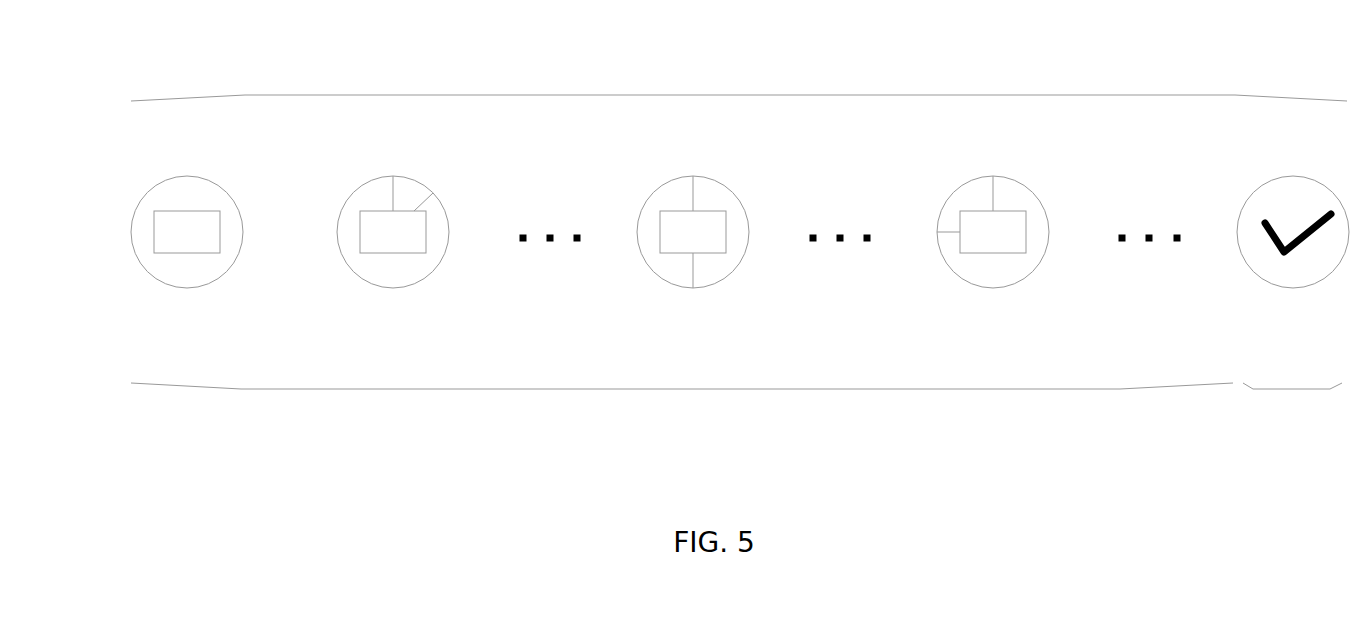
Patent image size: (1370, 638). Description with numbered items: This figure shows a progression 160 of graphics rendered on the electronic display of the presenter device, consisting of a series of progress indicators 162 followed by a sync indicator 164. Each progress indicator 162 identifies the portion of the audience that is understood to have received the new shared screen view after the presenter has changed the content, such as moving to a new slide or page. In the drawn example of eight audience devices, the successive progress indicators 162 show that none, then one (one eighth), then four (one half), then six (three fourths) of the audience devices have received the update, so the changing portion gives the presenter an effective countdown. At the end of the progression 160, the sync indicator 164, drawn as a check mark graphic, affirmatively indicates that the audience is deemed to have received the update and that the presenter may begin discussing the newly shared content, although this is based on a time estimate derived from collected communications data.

The progression of graphics 160 is at (739, 95).
The progress indicators 162 is at (681, 389).
The sync indicator 164 is at (1291, 389).